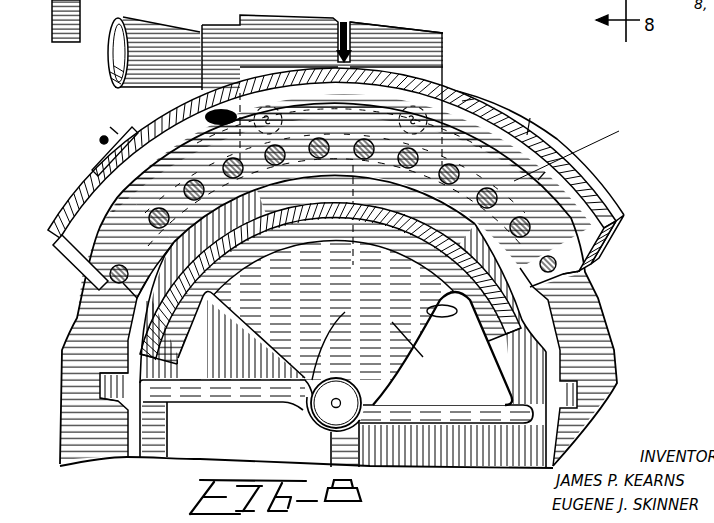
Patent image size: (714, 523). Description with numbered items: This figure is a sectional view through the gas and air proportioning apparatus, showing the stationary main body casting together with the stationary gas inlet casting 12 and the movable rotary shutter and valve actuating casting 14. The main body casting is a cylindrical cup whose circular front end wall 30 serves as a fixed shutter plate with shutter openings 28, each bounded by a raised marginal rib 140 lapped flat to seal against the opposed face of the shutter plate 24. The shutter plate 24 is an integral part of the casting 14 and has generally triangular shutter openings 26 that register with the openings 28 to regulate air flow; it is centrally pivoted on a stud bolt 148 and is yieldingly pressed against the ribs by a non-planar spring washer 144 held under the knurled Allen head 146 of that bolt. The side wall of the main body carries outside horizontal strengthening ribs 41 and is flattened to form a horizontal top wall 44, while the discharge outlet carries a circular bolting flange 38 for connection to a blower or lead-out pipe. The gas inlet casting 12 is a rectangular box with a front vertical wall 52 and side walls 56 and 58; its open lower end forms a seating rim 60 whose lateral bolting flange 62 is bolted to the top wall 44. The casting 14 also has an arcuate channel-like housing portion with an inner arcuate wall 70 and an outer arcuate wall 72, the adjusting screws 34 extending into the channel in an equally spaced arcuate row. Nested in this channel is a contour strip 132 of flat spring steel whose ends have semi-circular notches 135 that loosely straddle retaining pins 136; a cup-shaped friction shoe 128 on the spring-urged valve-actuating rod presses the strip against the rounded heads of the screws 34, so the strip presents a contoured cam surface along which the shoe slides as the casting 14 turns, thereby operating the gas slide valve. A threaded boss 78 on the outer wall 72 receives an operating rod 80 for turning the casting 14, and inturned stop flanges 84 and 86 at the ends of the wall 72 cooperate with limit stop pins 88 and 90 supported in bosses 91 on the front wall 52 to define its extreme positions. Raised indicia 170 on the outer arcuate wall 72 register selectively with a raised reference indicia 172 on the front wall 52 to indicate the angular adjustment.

The gas inlet casting 12 is at (341, 99).
The rotary shutter and valve actuating casting 14 is at (616, 200).
The shutter plate 24 is at (420, 355).
The shutter openings 26 is at (429, 313).
The shutter openings 28 is at (190, 405).
The front end wall 30 is at (214, 322).
The adjusting screws 34 is at (520, 179).
The bolting flange 38 is at (83, 450).
The strengthening ribs 41 is at (100, 388).
The top wall 44 is at (318, 198).
The front vertical wall 52 is at (393, 40).
The side wall 56 is at (445, 53).
The side wall 58 is at (236, 26).
The seating rim 60 is at (136, 52).
The bolting flange 62 is at (547, 128).
The inner arcuate wall 70 is at (428, 238).
The outer arcuate wall 72 is at (545, 172).
The boss 78 is at (93, 163).
The rod 80 is at (98, 142).
The stop flange 84 is at (85, 258).
The stop flange 86 is at (616, 237).
The limit stop pin 88 is at (110, 127).
The limit stop pin 90 is at (474, 99).
The bosses 91 is at (162, 114).
The friction shoe 128 is at (353, 226).
The contour strip 132 is at (591, 185).
The semi-circular notches 135 is at (135, 297).
The pins 136 is at (582, 272).
The raised marginal rib 140 is at (228, 394).
The spring washer 144 is at (367, 342).
The Allen head 146 is at (331, 404).
The stud bolt 148 is at (326, 410).
The raised indicia 170 is at (545, 84).
The reference indicia 172 is at (352, 20).